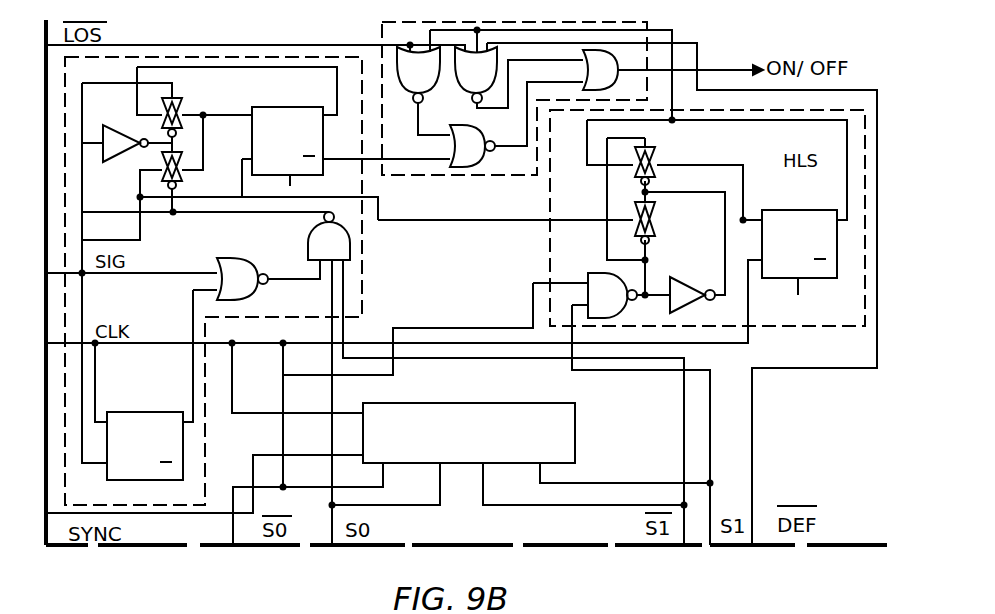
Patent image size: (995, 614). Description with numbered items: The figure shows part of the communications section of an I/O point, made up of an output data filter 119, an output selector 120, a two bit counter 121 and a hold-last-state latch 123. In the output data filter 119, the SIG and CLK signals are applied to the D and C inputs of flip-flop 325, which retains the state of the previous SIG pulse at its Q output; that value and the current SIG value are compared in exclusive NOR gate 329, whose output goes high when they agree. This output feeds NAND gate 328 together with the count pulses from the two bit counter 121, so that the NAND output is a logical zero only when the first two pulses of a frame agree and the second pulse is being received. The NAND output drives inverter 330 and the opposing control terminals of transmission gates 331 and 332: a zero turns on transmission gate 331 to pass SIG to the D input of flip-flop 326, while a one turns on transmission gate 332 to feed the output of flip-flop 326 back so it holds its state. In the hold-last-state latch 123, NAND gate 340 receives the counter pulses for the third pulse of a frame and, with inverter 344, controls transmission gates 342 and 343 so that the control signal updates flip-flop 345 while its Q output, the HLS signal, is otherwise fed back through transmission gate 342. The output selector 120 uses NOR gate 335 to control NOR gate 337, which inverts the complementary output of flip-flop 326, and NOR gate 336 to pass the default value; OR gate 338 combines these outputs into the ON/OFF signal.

The output data filter 119 is at (365, 300).
The output selector 120 is at (470, 177).
The two bit counter 121 is at (542, 403).
The hold-last-state latch 123 is at (548, 252).
The flip-flop 325 is at (117, 412).
The flip-flop 326 is at (260, 107).
The NAND gate 328 is at (350, 250).
The exclusive NOR gate 329 is at (246, 262).
The inverter 330 is at (130, 128).
The transmission gate 331 is at (180, 175).
The transmission gate 332 is at (178, 107).
The NOR gate 335 is at (398, 48).
The NOR gate 336 is at (466, 104).
The NOR gate 337 is at (482, 167).
The OR gate 338 is at (583, 54).
The NAND gate 340 is at (580, 292).
The transmission gate 342 is at (657, 155).
The transmission gate 343 is at (657, 236).
The inverter 344 is at (683, 306).
The flip-flop 345 is at (822, 210).